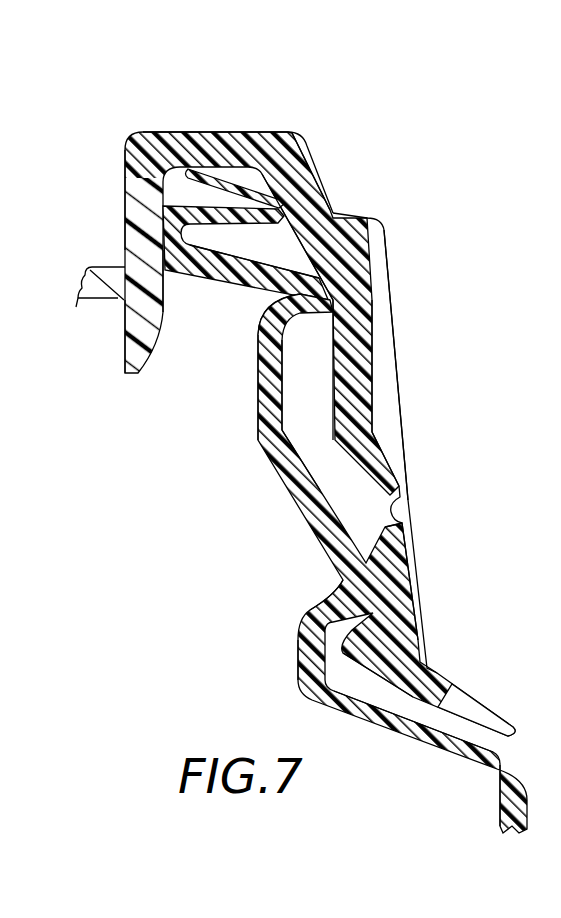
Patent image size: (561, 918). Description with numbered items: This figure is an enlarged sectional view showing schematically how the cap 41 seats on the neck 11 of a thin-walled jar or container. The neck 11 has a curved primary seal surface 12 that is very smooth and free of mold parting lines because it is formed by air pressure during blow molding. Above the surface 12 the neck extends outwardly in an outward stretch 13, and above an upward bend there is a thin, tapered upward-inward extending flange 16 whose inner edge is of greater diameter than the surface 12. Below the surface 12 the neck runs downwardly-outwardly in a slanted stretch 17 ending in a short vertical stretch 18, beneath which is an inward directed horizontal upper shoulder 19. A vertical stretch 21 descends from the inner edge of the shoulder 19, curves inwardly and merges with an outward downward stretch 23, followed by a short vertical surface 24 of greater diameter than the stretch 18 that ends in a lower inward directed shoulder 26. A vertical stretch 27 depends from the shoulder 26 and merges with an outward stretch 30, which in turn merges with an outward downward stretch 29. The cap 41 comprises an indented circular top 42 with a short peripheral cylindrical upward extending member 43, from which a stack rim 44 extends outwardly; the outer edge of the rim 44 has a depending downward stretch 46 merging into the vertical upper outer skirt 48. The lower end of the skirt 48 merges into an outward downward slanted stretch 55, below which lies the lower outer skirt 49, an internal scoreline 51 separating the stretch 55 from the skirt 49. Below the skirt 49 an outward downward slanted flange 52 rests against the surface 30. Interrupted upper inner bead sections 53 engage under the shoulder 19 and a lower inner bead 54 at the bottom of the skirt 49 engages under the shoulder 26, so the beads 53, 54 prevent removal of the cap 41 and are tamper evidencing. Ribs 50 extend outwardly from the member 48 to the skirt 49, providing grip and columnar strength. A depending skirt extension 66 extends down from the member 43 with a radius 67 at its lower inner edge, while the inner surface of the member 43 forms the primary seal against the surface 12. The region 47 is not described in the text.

The neck 11 is at (290, 565).
The primary seal surface 12 is at (128, 214).
The outward stretch 13 is at (212, 222).
The flange 16 is at (234, 180).
The slanted stretch 17 is at (232, 286).
The short vertical stretch 18 is at (340, 300).
The upper shoulder 19 is at (258, 388).
The vertical stretch 21 is at (360, 427).
The outward downward stretch 23 is at (310, 502).
The short vertical surface 24 is at (397, 602).
The lower shoulder 26 is at (312, 618).
The vertical stretch 27 is at (302, 664).
The outward downward stretch 29 is at (500, 794).
The outward stretch 30 is at (407, 735).
The cap 41 is at (170, 126).
The indented circular top 42 is at (102, 266).
The peripheral cylindrical upward extending member 43 is at (128, 184).
The stack rim 44 is at (197, 140).
The depending downward stretch 46 is at (312, 166).
The inclined wall 47 is at (315, 196).
The upper outer skirt 48 is at (360, 403).
The lower outer skirt 49 is at (397, 575).
The ribs 50 is at (378, 273).
The internal scoreline 51 is at (392, 512).
The outward downward slanted flange 52 is at (489, 707).
The interrupted upper inner bead sections 53 is at (367, 357).
The lower inner bead 54 is at (400, 640).
The outward downward slanted stretch 55 is at (387, 453).
The depending skirt extension 66 is at (150, 312).
The radius 67 is at (152, 360).